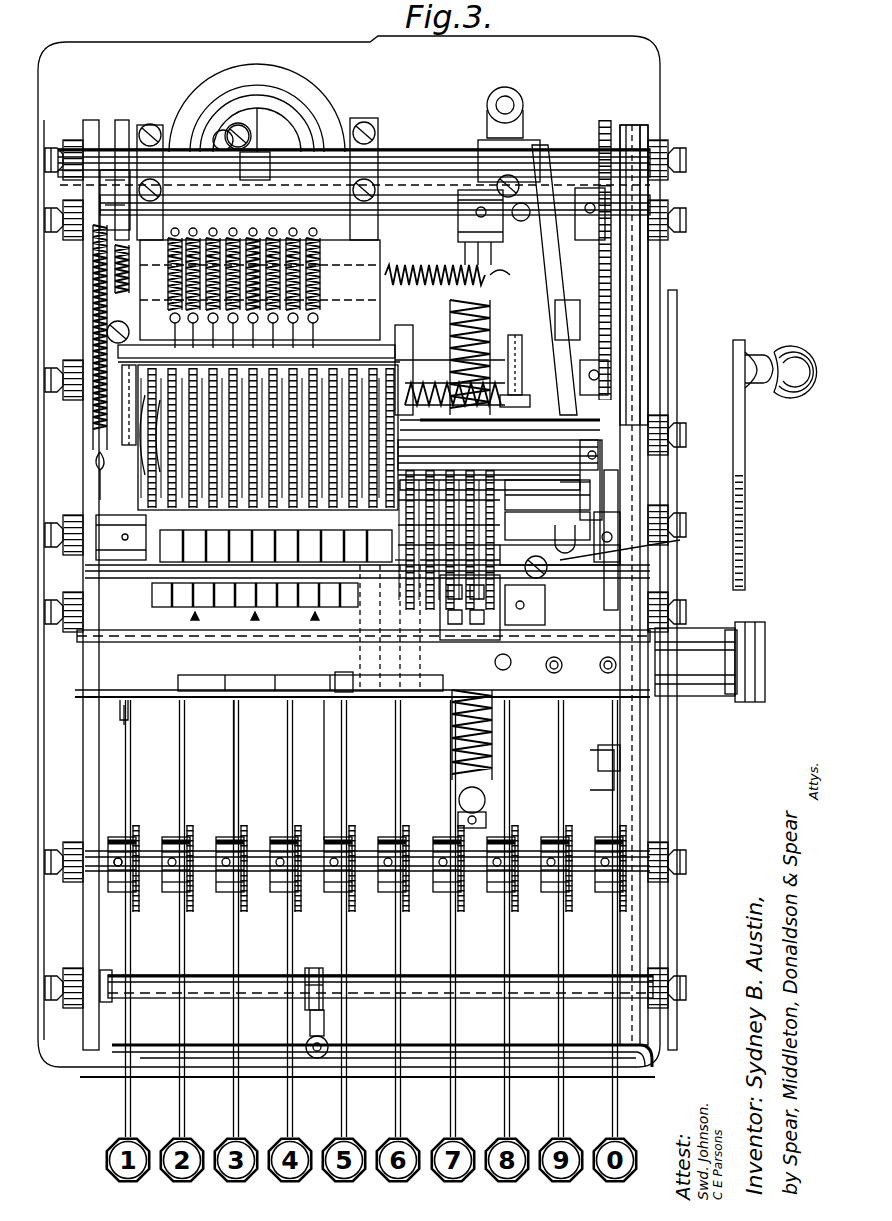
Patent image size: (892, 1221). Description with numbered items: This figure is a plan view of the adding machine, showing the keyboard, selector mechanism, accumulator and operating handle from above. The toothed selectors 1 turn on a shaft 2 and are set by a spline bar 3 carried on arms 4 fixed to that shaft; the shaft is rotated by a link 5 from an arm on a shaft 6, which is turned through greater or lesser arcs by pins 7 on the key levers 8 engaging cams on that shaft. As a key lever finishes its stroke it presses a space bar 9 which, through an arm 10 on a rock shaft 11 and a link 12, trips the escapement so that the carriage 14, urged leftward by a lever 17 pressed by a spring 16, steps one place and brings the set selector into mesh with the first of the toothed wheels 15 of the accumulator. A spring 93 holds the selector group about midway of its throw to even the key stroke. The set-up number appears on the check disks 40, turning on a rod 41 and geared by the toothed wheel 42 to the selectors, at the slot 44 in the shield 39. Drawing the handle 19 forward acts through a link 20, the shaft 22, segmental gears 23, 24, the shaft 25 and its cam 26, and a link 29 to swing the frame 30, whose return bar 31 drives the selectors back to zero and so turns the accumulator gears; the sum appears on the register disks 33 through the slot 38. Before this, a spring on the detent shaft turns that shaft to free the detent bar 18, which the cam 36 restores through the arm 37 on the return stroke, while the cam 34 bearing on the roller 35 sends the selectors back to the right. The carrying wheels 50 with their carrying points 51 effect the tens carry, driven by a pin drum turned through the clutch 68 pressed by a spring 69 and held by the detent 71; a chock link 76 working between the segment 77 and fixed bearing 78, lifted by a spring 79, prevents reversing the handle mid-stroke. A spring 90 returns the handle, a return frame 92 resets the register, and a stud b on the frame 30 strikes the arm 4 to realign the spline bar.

The toothed selectors 1 is at (420, 545).
The shaft 2 is at (547, 526).
The spline bar 3 is at (600, 450).
The arms 4 is at (600, 470).
The link 5 is at (610, 578).
The shaft 6 is at (600, 850).
The pins 7 is at (70, 537).
The key levers 8 is at (234, 792).
The space bar 9 is at (270, 1050).
The arm 10 is at (322, 1028).
The rock shaft 11 is at (372, 976).
The link 12 is at (320, 790).
The carriage 14 is at (547, 498).
The toothed wheels 15 is at (591, 480).
The spring 16 is at (507, 282).
The lever 17 is at (547, 280).
The detent bar 18 is at (508, 105).
The handle 19 is at (733, 408).
The link 20 is at (650, 336).
The shaft 22 is at (418, 205).
The segmental gear 23 is at (600, 268).
The segmental gear 24 is at (605, 322).
The shaft 25 is at (418, 383).
The cam 26 is at (558, 298).
The link 29 is at (643, 545).
The frame 30 is at (600, 490).
The return bar 31 is at (567, 488).
The register disks 33 is at (152, 595).
The cam 34 is at (540, 142).
The roller 35 is at (528, 218).
The cam 36 is at (518, 340).
The arm 37 is at (522, 398).
The slot 38 is at (165, 612).
The shield 39 is at (362, 669).
The check disks 40 is at (405, 690).
The rod 41 is at (500, 638).
The toothed wheel 42 is at (508, 668).
The slot 44 is at (263, 678).
The carrying wheels 50 is at (195, 455).
The carrying points 51 is at (140, 528).
The clutch 68 is at (455, 353).
The spring 69 is at (450, 395).
The detent 71 is at (152, 435).
The link 76 is at (130, 286).
The segment 77 is at (113, 190).
The fixed bearing 78 is at (92, 297).
The spring 79 is at (122, 372).
The spring 90 is at (493, 735).
The return frame 92 is at (385, 345).
The spring 93 is at (108, 334).
The stud or screw b is at (607, 517).